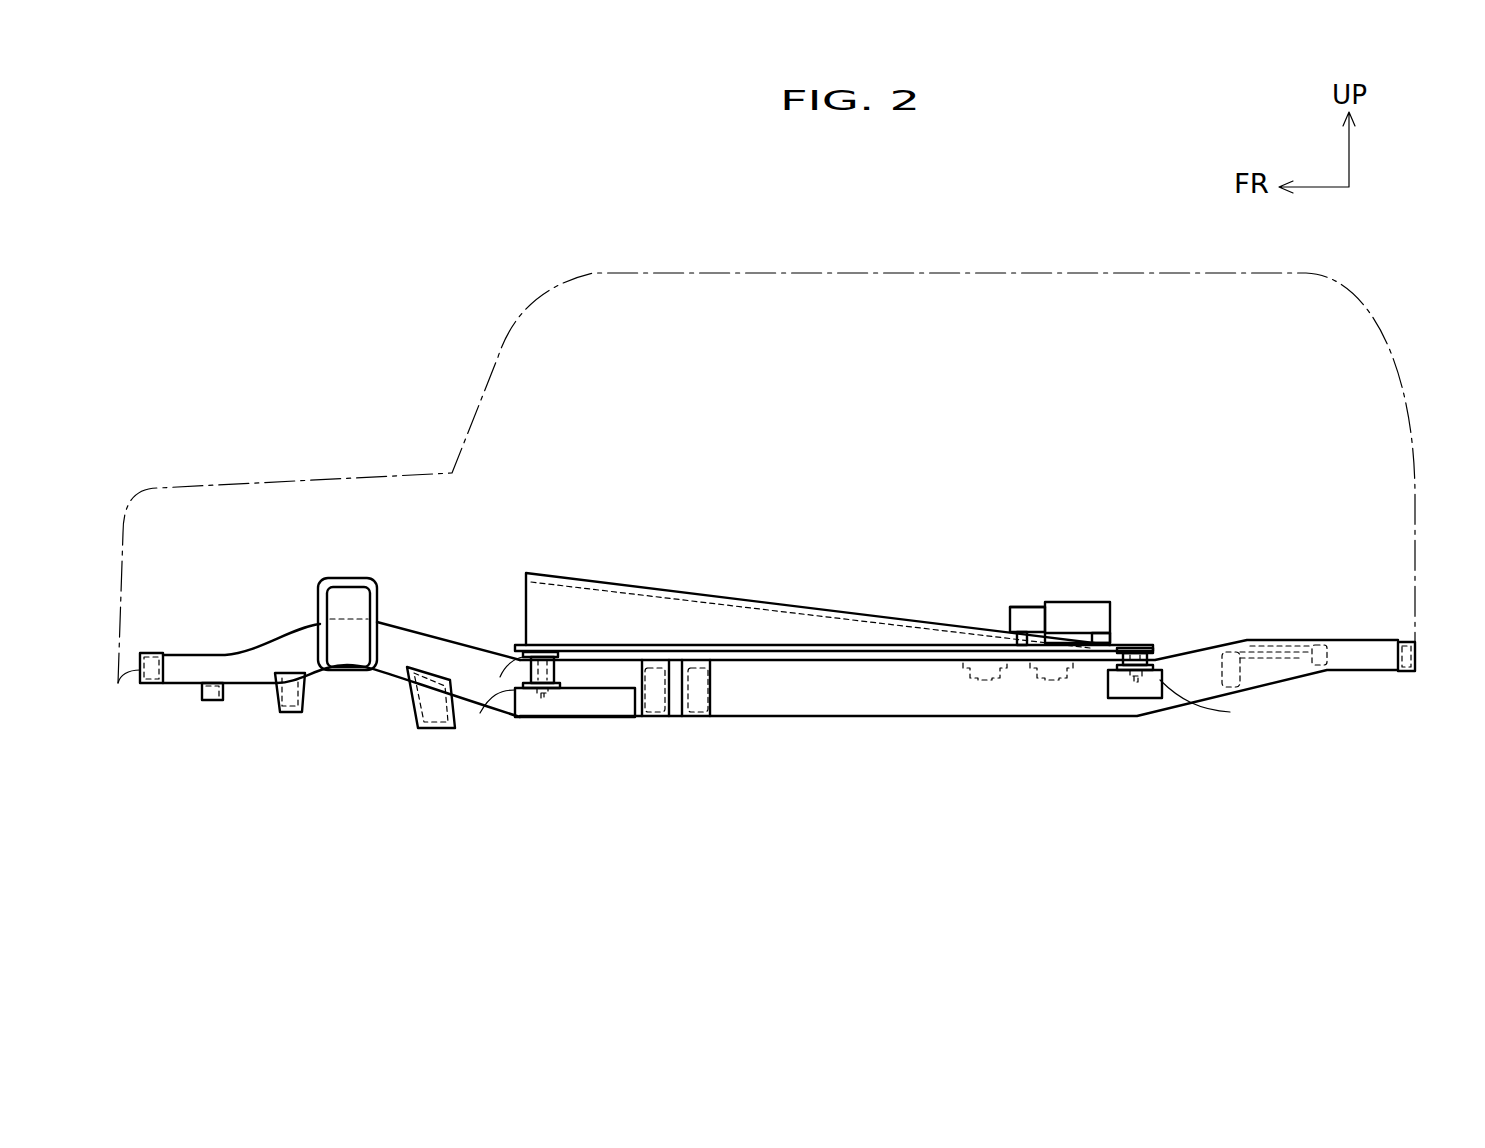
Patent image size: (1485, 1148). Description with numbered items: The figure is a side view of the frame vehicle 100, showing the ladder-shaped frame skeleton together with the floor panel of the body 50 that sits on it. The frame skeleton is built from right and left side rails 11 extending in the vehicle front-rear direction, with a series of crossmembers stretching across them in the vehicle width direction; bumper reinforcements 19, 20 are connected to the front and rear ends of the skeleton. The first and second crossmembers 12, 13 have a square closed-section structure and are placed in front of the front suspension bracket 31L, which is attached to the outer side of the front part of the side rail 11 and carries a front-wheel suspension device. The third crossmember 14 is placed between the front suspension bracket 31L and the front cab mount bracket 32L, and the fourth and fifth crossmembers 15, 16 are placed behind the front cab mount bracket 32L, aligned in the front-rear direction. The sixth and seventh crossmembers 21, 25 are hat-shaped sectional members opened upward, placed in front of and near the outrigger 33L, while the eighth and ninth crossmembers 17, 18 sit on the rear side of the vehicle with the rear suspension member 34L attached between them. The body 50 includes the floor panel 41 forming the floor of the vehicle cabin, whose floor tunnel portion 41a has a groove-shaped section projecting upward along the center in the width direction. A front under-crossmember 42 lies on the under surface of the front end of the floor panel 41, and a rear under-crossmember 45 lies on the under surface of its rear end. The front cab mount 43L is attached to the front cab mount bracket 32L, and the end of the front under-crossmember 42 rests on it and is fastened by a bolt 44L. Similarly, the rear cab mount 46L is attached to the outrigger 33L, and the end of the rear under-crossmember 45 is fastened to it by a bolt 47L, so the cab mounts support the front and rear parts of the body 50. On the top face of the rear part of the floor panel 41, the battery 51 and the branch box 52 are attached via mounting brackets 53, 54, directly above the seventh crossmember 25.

The frame vehicle 100 is at (252, 222).
The body 50 is at (1394, 356).
The bumper reinforcement 19 is at (118, 686).
The bumper reinforcement 20 is at (1417, 653).
The front suspension bracket 31L is at (347, 578).
The first crossmember 12 is at (208, 702).
The second crossmember 13 is at (275, 710).
The third crossmember 14 is at (417, 718).
The side rail 11 is at (903, 705).
The rear under-crossmember 45 is at (1170, 662).
The eighth crossmember 17 is at (1240, 685).
The ninth crossmember 18 is at (1327, 660).
The rear suspension member 34L is at (1343, 663).
The floor panel 41 is at (832, 655).
The floor tunnel portion 41a is at (792, 602).
The front under-crossmember 42 is at (560, 655).
The bolt 44L is at (573, 700).
The front cab mount 43L is at (530, 670).
The front cab mount bracket 32L is at (515, 703).
The fourth crossmember 15 is at (674, 708).
The fifth crossmember 16 is at (716, 697).
The sixth crossmember 21 is at (990, 680).
The seventh crossmember 25 is at (1055, 680).
The mounting bracket 54 is at (1003, 640).
The battery 51 is at (1079, 601).
The branch box 52 is at (1028, 607).
The mounting bracket 53 is at (1113, 636).
The rear cab mount 46L is at (1110, 668).
The bolt 47L is at (1177, 670).
The outrigger 33L is at (1143, 698).